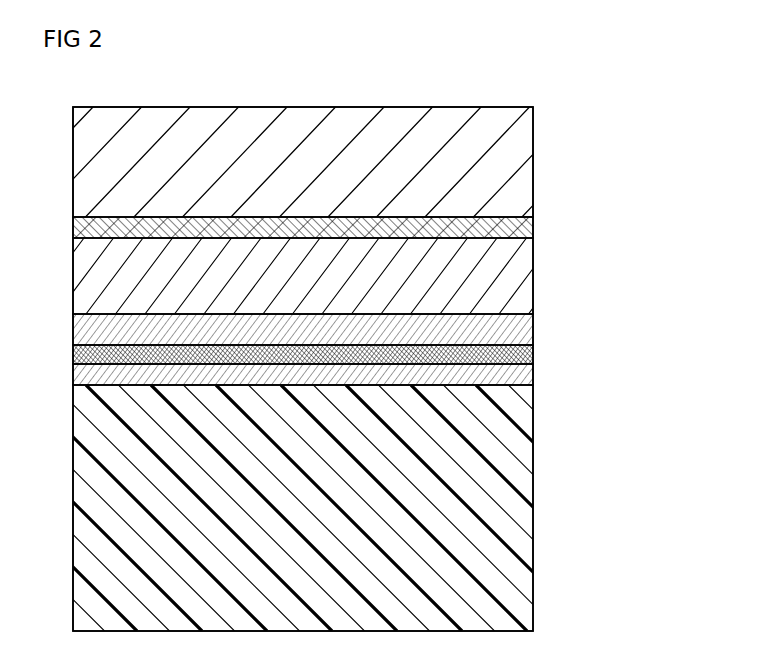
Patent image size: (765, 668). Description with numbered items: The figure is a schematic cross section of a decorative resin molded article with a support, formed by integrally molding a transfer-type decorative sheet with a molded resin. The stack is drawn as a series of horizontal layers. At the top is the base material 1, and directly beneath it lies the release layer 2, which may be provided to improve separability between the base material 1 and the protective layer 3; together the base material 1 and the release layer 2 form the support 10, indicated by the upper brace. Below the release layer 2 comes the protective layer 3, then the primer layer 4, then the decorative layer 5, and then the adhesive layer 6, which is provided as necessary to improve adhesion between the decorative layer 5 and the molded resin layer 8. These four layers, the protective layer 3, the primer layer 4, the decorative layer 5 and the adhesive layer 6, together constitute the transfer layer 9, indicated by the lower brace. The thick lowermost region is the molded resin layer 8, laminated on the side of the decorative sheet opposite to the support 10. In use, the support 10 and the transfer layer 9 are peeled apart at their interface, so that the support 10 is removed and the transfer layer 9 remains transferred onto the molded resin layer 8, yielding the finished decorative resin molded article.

The base material 1 is at (533, 133).
The release layer 2 is at (533, 228).
The protective layer 3 is at (533, 260).
The primer layer 4 is at (533, 330).
The decorative layer 5 is at (533, 353).
The adhesive layer 6 is at (357, 363).
The molded resin layer 8 is at (533, 503).
The transfer layer 9 is at (359, 308).
The support 10 is at (353, 171).